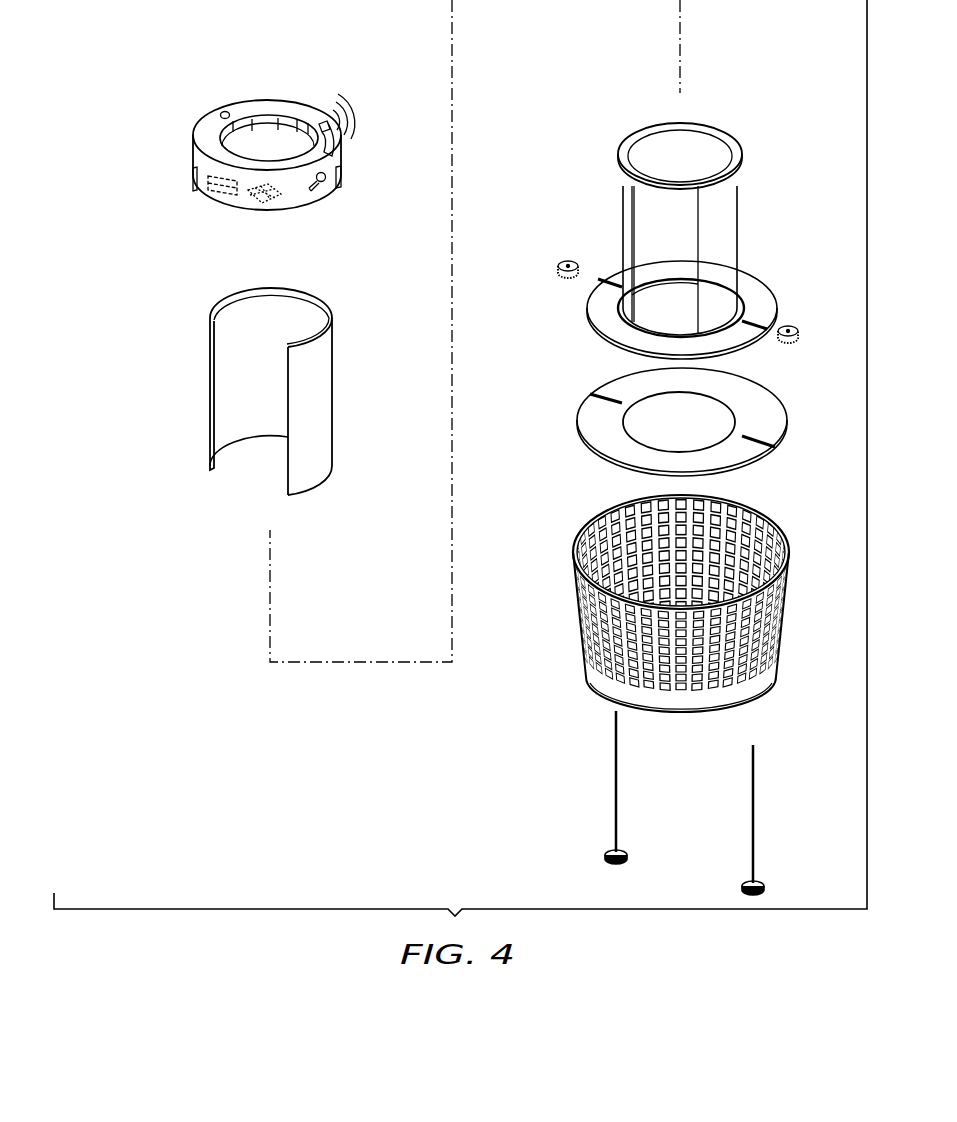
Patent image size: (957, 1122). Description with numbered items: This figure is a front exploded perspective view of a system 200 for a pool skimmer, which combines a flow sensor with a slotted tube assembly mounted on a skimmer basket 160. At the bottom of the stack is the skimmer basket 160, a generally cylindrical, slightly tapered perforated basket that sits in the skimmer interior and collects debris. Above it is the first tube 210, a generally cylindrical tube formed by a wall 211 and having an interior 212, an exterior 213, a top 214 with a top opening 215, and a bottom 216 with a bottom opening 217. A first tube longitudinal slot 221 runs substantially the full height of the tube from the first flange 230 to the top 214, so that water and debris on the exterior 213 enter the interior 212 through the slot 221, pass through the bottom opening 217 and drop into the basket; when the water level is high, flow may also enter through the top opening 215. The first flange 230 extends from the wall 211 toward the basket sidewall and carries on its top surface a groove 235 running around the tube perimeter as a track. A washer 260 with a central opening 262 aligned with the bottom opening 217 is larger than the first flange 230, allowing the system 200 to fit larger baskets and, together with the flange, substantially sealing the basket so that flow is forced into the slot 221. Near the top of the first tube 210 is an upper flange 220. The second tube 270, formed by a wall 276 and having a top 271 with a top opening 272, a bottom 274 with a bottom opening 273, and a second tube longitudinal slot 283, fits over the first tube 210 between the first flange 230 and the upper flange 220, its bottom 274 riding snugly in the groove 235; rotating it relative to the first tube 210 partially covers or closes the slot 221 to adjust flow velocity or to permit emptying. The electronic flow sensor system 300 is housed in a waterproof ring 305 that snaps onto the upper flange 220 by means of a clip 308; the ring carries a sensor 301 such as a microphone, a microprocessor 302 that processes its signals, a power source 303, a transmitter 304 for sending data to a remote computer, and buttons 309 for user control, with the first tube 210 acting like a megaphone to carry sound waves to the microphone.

The skimmer basket 160 is at (580, 608).
The system 200 is at (220, 779).
The first tube 210 is at (739, 208).
The wall 211 is at (724, 278).
The interior 212 is at (668, 323).
The exterior 213 is at (731, 230).
The top 214 is at (744, 158).
The top opening 215 is at (744, 145).
The bottom 216 is at (744, 300).
The bottom opening 217 is at (667, 338).
The upper flange 220 is at (713, 158).
The first tube longitudinal slot 221 is at (672, 207).
The first flange 230 is at (751, 342).
The groove 235 is at (631, 307).
The washer 260 is at (605, 447).
The central opening 262 is at (653, 432).
The second tube 270 is at (311, 369).
The top 271 is at (213, 312).
The top opening 272 is at (291, 304).
The bottom opening 273 is at (255, 481).
The bottom 274 is at (214, 472).
The wall 276 is at (331, 418).
The second tube longitudinal slot 283 is at (240, 362).
The electronic flow sensor system 300 is at (352, 150).
The sensor 301 is at (319, 183).
The microprocessor 302 is at (262, 200).
The power source 303 is at (220, 190).
The transmitter 304 is at (321, 127).
The waterproof ring 305 is at (195, 137).
The clip 308 is at (194, 183).
The buttons 309 is at (222, 113).